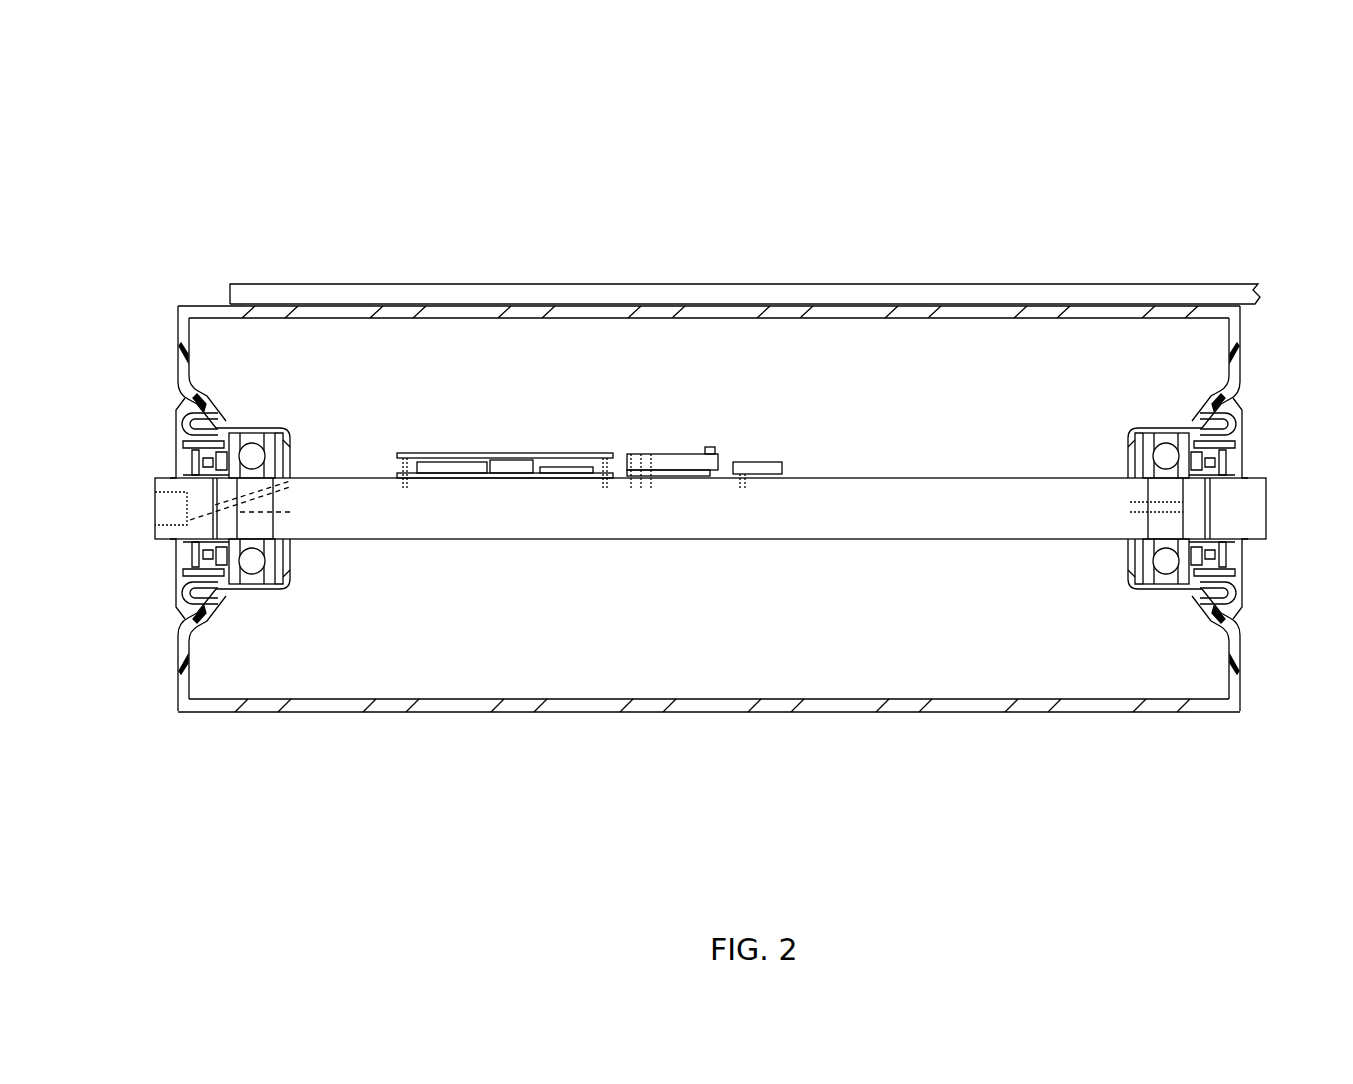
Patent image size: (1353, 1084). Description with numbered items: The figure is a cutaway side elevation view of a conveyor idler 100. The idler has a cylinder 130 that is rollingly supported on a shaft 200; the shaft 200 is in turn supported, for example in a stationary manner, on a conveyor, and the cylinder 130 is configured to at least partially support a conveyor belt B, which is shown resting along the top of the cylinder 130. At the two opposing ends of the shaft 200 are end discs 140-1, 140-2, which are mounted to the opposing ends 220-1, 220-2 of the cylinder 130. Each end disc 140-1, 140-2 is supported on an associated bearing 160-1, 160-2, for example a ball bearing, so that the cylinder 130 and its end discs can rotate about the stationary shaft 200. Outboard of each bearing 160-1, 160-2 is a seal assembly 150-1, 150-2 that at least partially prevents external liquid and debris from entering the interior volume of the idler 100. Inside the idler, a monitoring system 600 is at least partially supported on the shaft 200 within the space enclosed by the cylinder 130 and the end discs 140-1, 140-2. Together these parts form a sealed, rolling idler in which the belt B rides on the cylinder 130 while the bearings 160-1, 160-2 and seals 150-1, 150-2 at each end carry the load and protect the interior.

The conveyor idler 100 is at (104, 123).
The cylinder 130 is at (695, 305).
The end disc 140-1 is at (1242, 328).
The end disc 140-2 is at (177, 358).
The seal assembly 150-1 is at (1255, 427).
The seal assembly 150-2 is at (172, 453).
The bearing 160-1 is at (1143, 467).
The bearing 160-2 is at (290, 470).
The shaft 200 is at (912, 540).
The end of the cylinder 220-1 is at (1267, 513).
The end of the cylinder 220-2 is at (155, 524).
The monitoring system 600 is at (628, 398).
The conveyor belt B is at (928, 292).